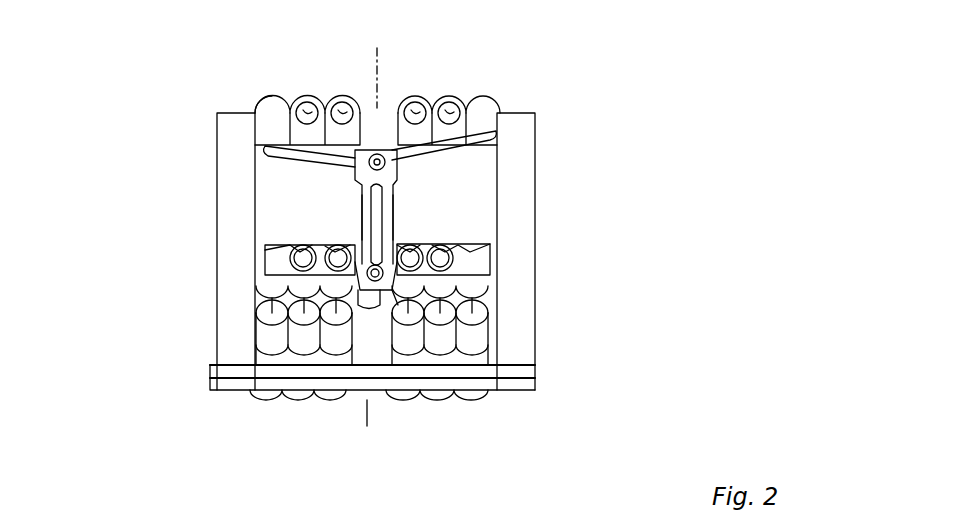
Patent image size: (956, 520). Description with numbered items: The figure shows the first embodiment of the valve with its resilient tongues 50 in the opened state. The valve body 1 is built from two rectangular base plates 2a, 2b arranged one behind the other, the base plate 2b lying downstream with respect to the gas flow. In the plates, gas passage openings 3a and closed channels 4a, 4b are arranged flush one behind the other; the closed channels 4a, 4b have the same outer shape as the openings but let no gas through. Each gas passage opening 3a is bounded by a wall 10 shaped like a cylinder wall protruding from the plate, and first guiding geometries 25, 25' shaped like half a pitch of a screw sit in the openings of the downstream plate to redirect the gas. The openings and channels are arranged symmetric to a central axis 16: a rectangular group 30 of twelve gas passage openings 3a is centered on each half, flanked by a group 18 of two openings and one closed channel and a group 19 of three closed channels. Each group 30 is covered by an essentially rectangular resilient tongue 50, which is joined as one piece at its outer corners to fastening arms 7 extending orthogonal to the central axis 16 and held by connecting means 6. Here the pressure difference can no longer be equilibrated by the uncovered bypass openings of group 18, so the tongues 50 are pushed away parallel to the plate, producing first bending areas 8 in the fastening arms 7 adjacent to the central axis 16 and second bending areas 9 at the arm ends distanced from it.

The valve body 1 is at (540, 125).
The base plate 2a is at (530, 370).
The base plate 2b is at (527, 390).
The gas passage opening 3a is at (308, 98).
The closed channel 4a is at (500, 102).
The closed channel 4b is at (477, 395).
The connecting means 6 is at (398, 335).
The fastening arm 7 is at (490, 134).
The first bending area 8 is at (374, 150).
The second bending area 9 is at (268, 140).
The wall 10 is at (312, 98).
The central axis 16 is at (368, 412).
The group of gas passage openings and/or closed channels 18 is at (268, 98).
The group of closed channels 19 is at (312, 345).
The first guiding geometry 25 is at (295, 265).
The first guiding geometry 25' is at (515, 275).
The group of gas passage openings 30 is at (335, 268).
The resilient tongue 50 is at (460, 168).